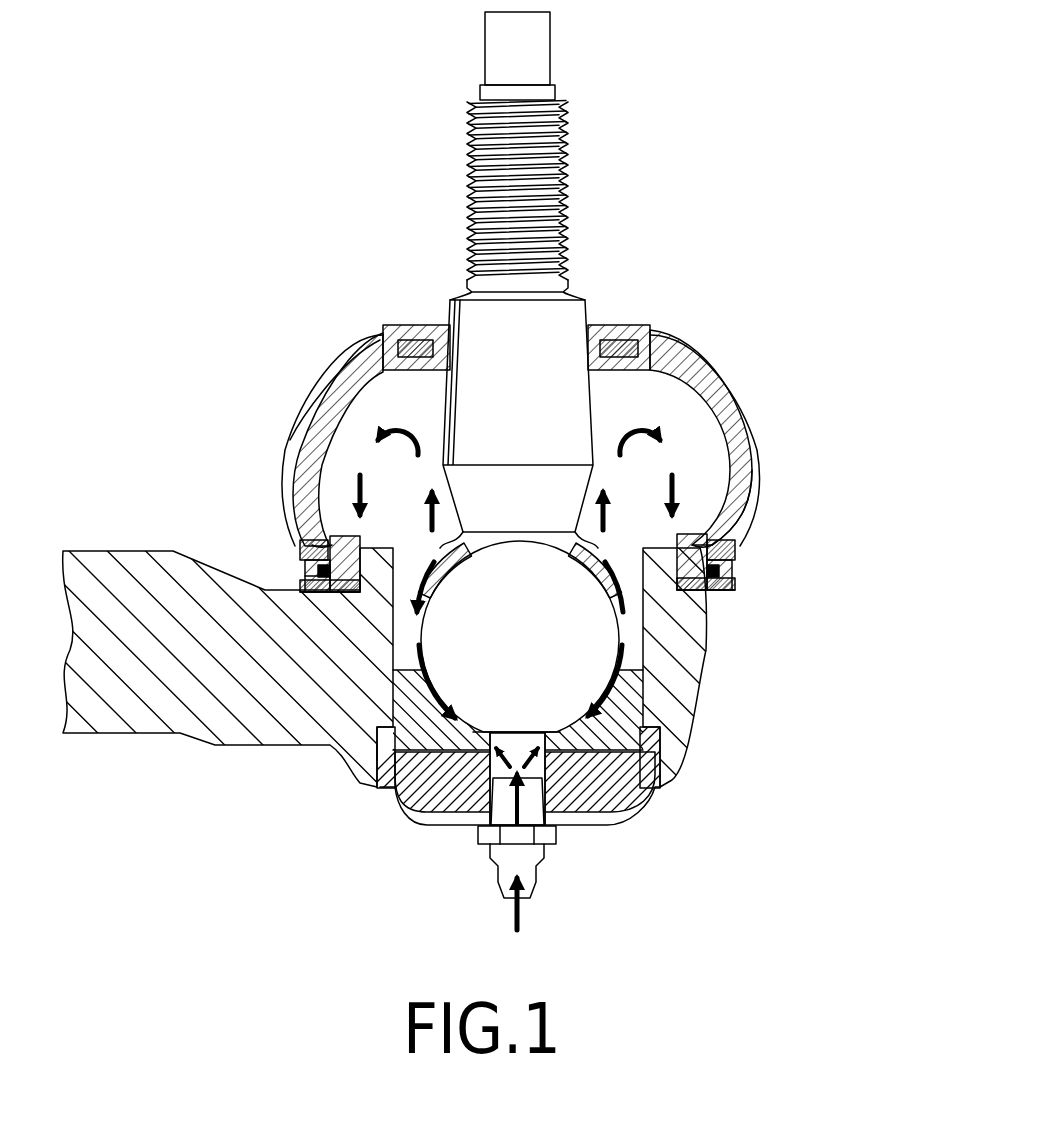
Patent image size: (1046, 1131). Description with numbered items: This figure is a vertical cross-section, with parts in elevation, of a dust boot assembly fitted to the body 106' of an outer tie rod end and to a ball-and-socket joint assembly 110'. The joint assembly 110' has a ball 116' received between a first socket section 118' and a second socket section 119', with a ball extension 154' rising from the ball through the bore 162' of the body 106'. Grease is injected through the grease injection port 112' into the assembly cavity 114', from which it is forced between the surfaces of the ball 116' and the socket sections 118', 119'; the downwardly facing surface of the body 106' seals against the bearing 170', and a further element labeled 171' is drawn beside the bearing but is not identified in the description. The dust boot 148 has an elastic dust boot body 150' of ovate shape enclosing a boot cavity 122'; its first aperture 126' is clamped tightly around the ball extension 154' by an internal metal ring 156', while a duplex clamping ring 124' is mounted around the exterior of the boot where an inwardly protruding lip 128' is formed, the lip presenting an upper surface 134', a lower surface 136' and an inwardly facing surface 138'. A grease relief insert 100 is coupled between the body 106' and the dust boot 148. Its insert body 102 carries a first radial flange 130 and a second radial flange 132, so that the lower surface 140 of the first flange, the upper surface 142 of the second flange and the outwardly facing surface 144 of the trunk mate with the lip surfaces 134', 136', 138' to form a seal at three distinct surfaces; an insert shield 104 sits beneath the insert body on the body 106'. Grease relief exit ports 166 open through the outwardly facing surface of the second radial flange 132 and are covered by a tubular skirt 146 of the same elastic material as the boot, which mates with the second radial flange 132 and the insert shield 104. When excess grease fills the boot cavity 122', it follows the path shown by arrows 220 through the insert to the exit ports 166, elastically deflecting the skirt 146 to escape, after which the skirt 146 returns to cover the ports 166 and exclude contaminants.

The ball extension 154' is at (556, 56).
The boot cavity 122' is at (521, 385).
The internal metal ring 156' is at (412, 295).
The first aperture 126' is at (637, 303).
The dust boot 148 is at (660, 436).
The arrows 220 is at (618, 540).
The bore 162' is at (715, 454).
The dust boot body 150' is at (808, 455).
The inwardly facing surface of lip 138' is at (310, 446).
The first radial flange 130 is at (300, 470).
The upper surface of lip 134' is at (261, 468).
The lip 128' is at (239, 488).
The duplex clamping ring 124' is at (224, 497).
The lower surface of lip 136' is at (211, 516).
The skirt 146 is at (300, 585).
The second radial flange 132 is at (308, 585).
The insert body 102 is at (753, 492).
The lower surface of first radial flange 140 is at (745, 520).
The grease relief insert 100 is at (752, 527).
The outwardly facing surface of trunk 144 is at (732, 594).
The upper surface of second radial flange 142 is at (725, 596).
The grease relief exit ports 166 is at (718, 596).
The insert shield 104 is at (710, 596).
The body 106' is at (484, 670).
The second socket section 119' is at (365, 745).
The first socket section 118' is at (465, 744).
The ball 116' is at (512, 806).
The assembly cavity 114' is at (487, 839).
The cover plate flange 171' is at (520, 852).
The bearing 170' is at (546, 818).
The joint assembly 110' is at (519, 846).
The grease injection port 112' is at (535, 901).